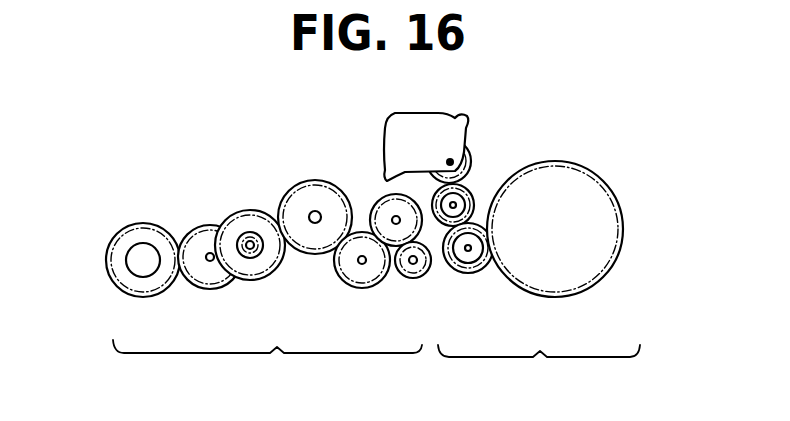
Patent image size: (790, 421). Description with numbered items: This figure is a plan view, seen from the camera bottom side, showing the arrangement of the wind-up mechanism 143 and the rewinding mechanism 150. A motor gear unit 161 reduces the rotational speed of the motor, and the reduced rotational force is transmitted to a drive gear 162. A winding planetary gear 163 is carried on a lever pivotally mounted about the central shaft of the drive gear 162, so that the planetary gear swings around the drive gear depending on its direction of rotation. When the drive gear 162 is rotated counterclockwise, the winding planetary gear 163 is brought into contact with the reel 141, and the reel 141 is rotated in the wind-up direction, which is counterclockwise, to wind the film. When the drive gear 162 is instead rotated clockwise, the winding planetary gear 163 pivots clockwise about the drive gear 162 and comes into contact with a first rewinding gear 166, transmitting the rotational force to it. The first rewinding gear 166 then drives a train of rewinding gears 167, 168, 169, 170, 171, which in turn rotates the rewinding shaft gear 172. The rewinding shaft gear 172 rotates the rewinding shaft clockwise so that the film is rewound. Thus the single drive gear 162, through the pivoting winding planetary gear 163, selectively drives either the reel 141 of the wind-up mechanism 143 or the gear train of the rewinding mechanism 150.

The reel 141 is at (553, 298).
The wind-up mechanism 143 is at (539, 371).
The rewinding mechanism 150 is at (267, 368).
The motor gear unit 161 is at (393, 125).
The drive gear 162 is at (474, 193).
The winding planetary gear 163 is at (467, 274).
The first rewinding gear 166 is at (412, 280).
The rewinding gear 167 is at (378, 199).
The rewinding gear 168 is at (341, 280).
The rewinding gear 169 is at (297, 184).
The rewinding gear 170 is at (240, 208).
The rewinding gear 171 is at (193, 225).
The rewinding shaft gear 172 is at (132, 222).